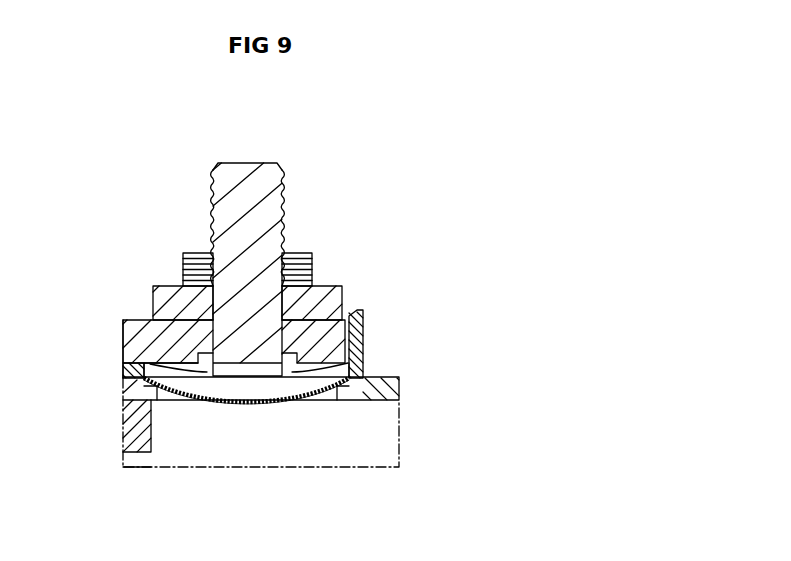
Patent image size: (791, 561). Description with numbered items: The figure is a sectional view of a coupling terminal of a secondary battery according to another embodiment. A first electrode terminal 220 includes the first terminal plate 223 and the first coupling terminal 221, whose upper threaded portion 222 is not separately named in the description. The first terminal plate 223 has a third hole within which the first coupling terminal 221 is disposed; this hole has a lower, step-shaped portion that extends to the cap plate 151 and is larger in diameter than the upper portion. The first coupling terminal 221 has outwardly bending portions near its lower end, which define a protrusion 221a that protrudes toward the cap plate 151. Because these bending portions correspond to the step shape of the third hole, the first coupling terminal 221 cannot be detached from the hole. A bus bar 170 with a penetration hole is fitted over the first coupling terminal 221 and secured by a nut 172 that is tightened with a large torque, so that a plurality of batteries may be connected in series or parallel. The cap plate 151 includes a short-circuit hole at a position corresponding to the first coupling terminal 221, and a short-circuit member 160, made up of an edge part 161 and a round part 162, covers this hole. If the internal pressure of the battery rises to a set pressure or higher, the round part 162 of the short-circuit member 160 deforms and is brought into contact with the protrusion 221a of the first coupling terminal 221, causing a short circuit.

The first electrode terminal 220 is at (263, 134).
The first coupling terminal 221 is at (233, 163).
The threaded portion 222 is at (284, 230).
The first terminal plate 223 is at (144, 352).
The protrusion 221a is at (150, 364).
The bus bar 170 is at (173, 290).
The nut 172 is at (303, 265).
The cap plate 151 is at (388, 390).
The edge part 161 is at (347, 382).
The short-circuit member 160 is at (268, 418).
The round part 162 is at (232, 403).